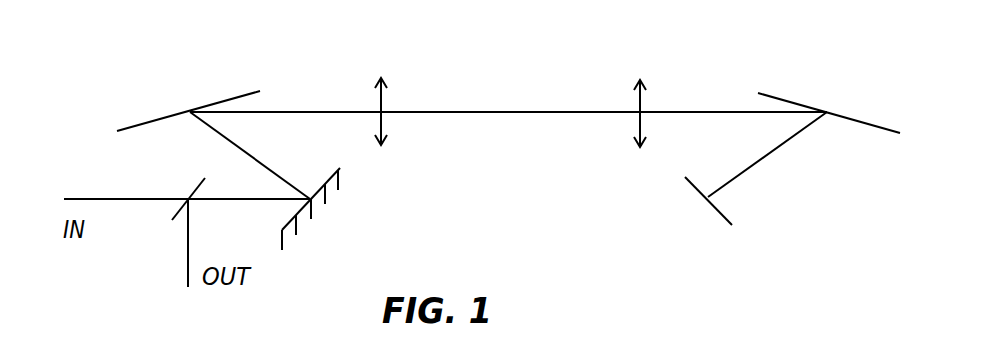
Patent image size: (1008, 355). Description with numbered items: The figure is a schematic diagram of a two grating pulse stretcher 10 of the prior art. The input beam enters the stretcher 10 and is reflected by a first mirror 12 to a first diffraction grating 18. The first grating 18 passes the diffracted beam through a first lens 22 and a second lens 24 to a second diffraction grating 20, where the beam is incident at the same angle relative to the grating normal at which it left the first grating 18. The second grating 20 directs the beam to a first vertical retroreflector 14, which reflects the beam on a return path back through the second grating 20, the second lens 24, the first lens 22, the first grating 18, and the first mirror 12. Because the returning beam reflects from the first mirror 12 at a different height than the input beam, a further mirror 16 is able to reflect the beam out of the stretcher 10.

The two grating pulse stretcher 10 is at (552, 213).
The first mirror 12 is at (340, 170).
The first vertical retroreflector 14 is at (723, 213).
The mirror 16 is at (176, 208).
The first diffraction grating 18 is at (250, 92).
The second diffraction grating 20 is at (860, 125).
The first lens 22 is at (385, 100).
The second lens 24 is at (645, 103).